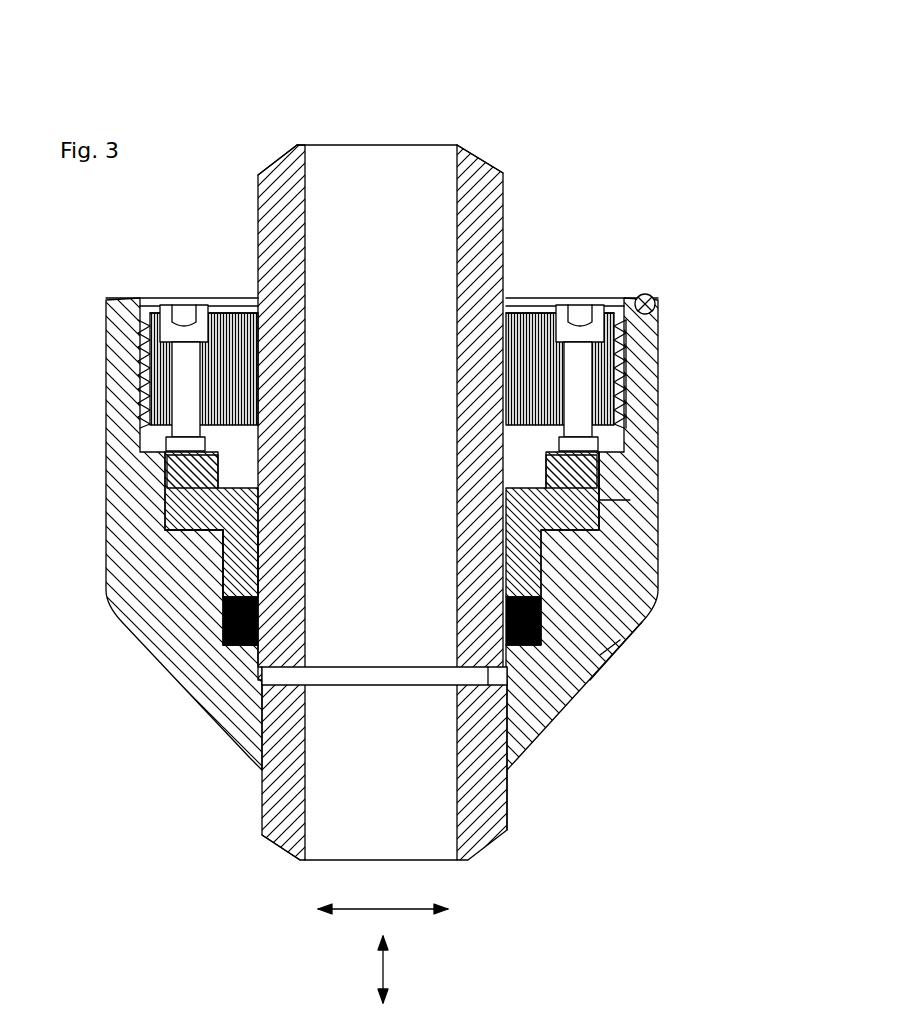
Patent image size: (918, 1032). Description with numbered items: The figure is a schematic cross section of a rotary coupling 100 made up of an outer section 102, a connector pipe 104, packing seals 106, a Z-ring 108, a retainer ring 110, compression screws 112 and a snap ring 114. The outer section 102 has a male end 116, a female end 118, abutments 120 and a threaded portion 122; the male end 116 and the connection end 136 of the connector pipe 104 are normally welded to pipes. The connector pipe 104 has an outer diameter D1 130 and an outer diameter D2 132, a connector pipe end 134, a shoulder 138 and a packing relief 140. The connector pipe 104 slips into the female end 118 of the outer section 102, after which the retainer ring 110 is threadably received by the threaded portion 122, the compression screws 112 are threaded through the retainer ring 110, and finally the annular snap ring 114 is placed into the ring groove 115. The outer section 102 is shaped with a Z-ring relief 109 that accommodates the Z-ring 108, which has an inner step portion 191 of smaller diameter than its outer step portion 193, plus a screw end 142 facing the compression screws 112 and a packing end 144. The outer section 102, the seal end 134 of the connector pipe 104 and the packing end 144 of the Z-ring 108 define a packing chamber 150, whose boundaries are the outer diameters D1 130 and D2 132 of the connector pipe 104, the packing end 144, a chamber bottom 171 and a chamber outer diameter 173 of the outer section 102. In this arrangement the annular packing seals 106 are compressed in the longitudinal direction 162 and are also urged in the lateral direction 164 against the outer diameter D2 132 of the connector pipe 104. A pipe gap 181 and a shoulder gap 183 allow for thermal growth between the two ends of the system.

The rotary coupling 100 is at (690, 76).
The outer section 102 is at (660, 544).
The connector pipe 104 is at (492, 243).
The packing seals 106 is at (553, 625).
The Z-ring 108 is at (590, 498).
The Z-ring relief 109 is at (600, 528).
The retainer ring 110 is at (622, 360).
The compression screws 112 is at (587, 405).
The snap ring 114 is at (655, 308).
The ring groove 115 is at (625, 295).
The male end 116 is at (283, 818).
The female end 118 is at (128, 300).
The abutments 120 is at (520, 725).
The threaded portion 122 is at (660, 325).
The outer diameter D1 130 is at (503, 183).
The outer diameter D2 132 is at (242, 646).
The connector pipe end 134 is at (290, 677).
The connection end 136 is at (281, 148).
The shoulder 138 is at (238, 451).
The packing relief 140 is at (240, 562).
The screw end 142 is at (596, 455).
The packing end 144 is at (543, 593).
The packing chamber 150 is at (590, 682).
The longitudinal direction 162 is at (386, 958).
The lateral direction 164 is at (340, 912).
The chamber bottom 171 is at (240, 655).
The chamber outer diameter 173 is at (610, 645).
The pipe gap 181 is at (485, 675).
The shoulder gap 183 is at (240, 490).
The inner step portion 191 is at (235, 622).
The outer step portion 193 is at (122, 400).